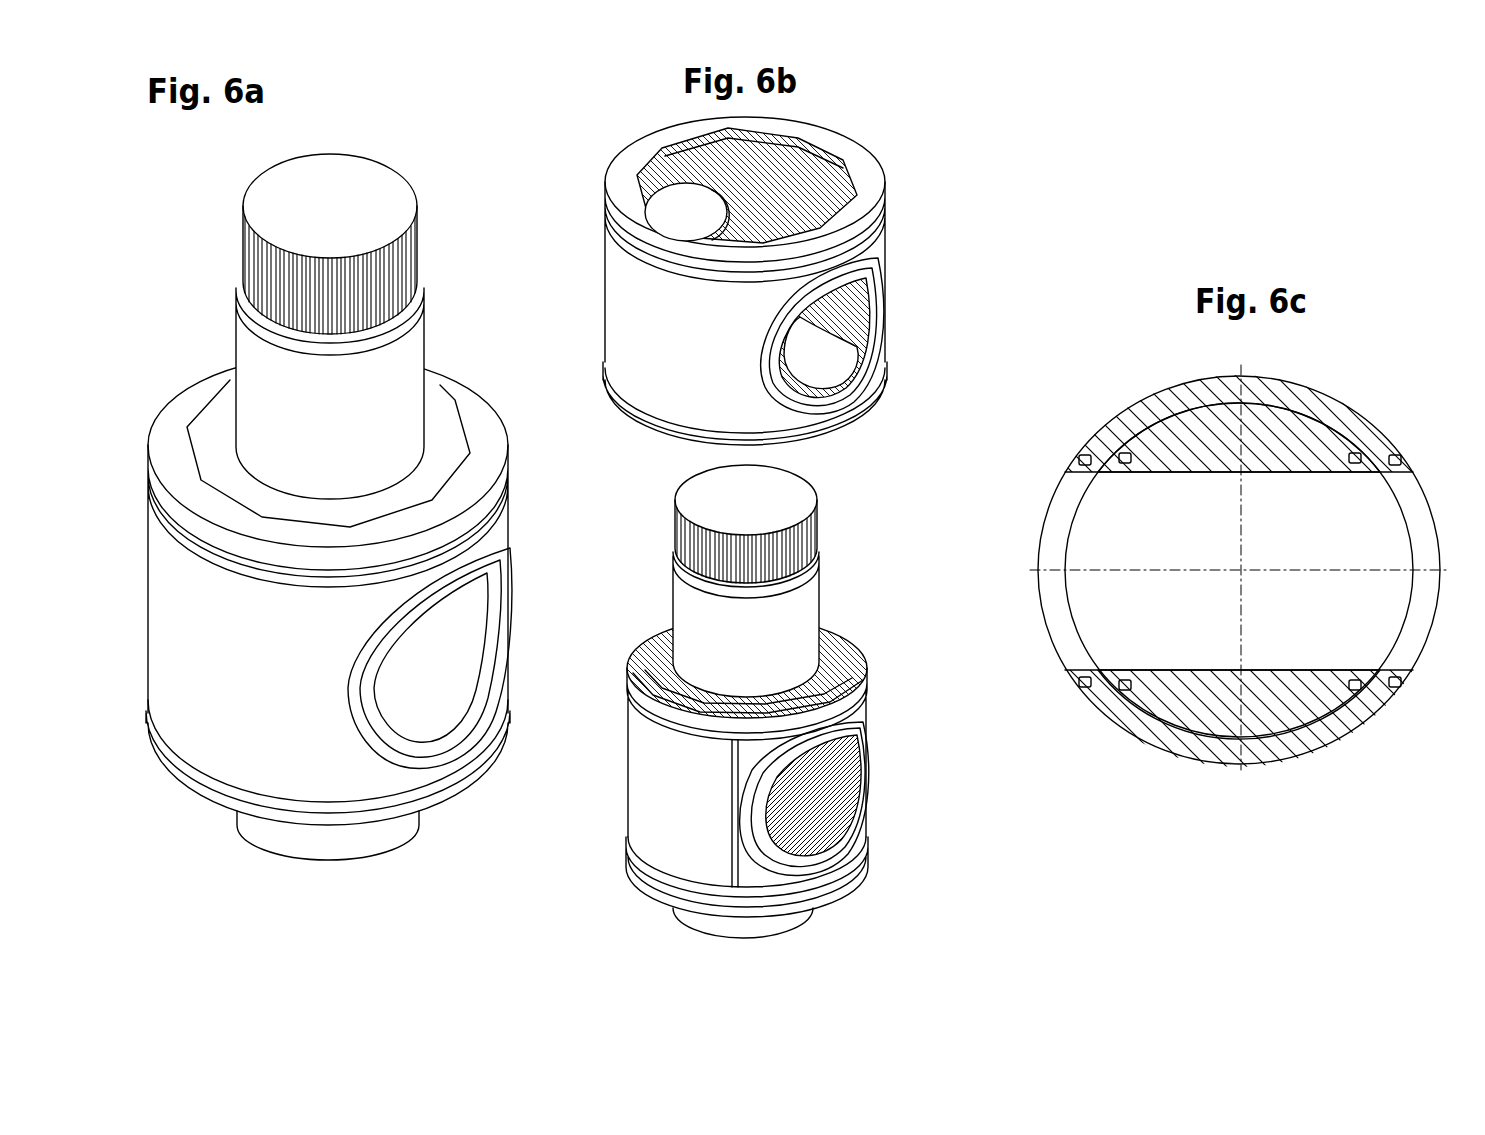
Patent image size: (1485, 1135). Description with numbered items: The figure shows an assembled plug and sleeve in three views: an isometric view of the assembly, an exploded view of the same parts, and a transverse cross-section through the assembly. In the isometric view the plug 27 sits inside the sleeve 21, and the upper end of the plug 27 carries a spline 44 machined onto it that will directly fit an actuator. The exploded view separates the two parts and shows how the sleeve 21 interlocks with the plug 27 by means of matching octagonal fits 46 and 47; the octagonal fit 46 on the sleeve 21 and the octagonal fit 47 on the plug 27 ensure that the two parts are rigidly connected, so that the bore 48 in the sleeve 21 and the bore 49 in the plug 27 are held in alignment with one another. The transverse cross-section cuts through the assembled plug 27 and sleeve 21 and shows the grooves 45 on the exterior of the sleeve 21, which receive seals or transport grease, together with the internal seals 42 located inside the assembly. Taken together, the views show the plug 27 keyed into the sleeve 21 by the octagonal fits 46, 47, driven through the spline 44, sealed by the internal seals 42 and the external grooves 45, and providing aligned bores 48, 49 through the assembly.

In FIG. 6A, the sleeve 21 is at (233, 767).
In FIG. 6B, the sleeve 21 is at (642, 152).
In FIG. 6C, the sleeve 21 is at (1190, 402).
In FIG. 6A, the plug 27 is at (258, 352).
In FIG. 6B, the plug 27 is at (697, 622).
In FIG. 6C, the plug 27 is at (1282, 452).
In FIG. 6C, the internal seals 42 is at (1358, 462).
In FIG. 6A, the spline 44 is at (393, 173).
In FIG. 6A, the grooves 45 is at (495, 548).
In FIG. 6C, the grooves 45 is at (1082, 460).
In FIG. 6B, the octagonal fit 46 is at (845, 172).
In FIG. 6B, the octagonal fit 47 is at (847, 646).
In FIG. 6B, the bore 48 is at (868, 333).
In FIG. 6B, the bore 49 is at (845, 782).